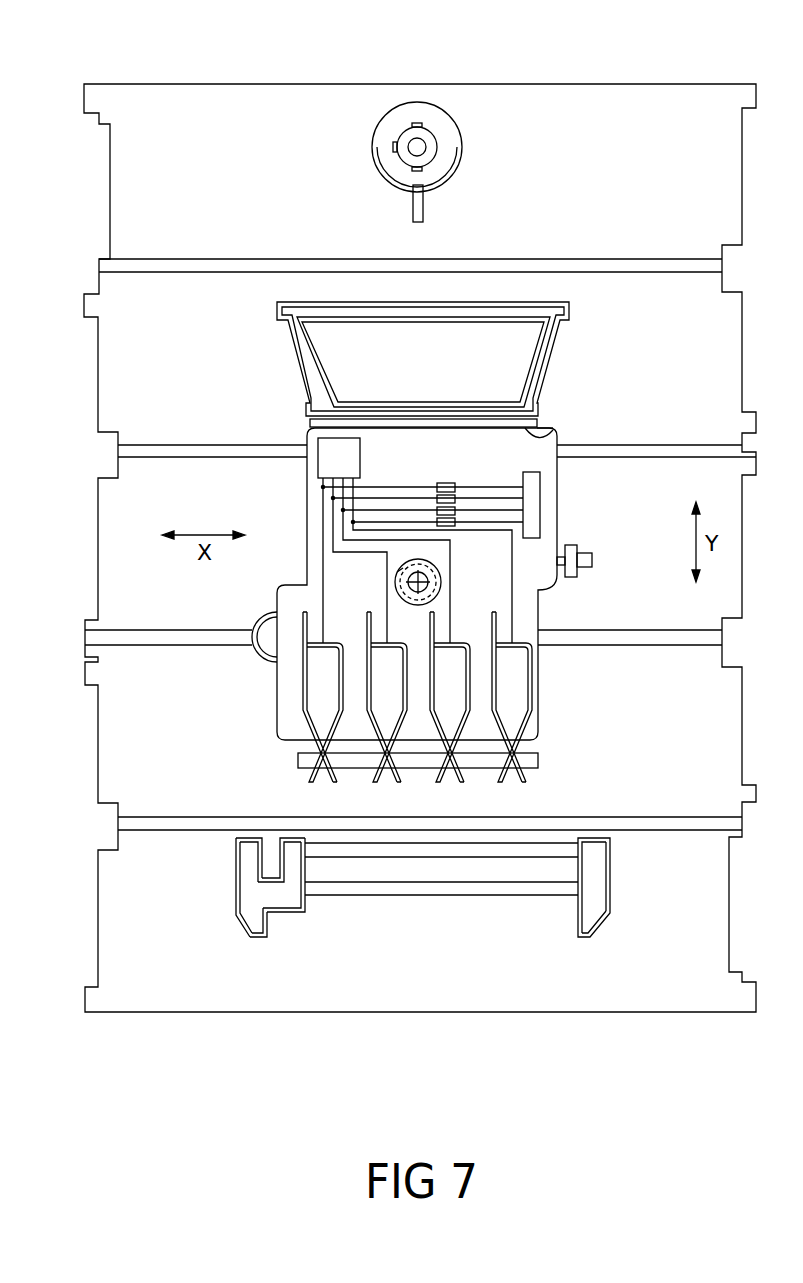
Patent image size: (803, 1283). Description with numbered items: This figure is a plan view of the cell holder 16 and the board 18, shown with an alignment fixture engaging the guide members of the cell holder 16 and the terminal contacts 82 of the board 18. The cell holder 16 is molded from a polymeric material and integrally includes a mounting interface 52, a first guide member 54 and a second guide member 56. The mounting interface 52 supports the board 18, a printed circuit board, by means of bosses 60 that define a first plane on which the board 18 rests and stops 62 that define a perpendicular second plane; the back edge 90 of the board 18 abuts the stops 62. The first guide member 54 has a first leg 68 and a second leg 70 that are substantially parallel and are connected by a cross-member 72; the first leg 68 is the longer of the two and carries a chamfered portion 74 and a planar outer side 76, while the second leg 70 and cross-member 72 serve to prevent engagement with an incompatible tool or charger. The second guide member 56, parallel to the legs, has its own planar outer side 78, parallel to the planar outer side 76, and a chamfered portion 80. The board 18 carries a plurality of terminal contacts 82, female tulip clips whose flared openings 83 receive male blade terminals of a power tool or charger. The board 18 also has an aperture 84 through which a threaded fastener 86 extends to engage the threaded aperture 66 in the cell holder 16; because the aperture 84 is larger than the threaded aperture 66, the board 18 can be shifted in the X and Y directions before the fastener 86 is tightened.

The cell holder 16 is at (678, 84).
The board 18 is at (548, 500).
The mounting interface 52 is at (575, 527).
The first guide member 54 is at (239, 917).
The second guide member 56 is at (644, 897).
The bosses 60 is at (262, 653).
The stops 62 is at (310, 424).
The threaded aperture 66 is at (432, 565).
The first leg 68 is at (252, 850).
The second leg 70 is at (290, 852).
The cross-member 72 is at (277, 897).
The chamfered portion 74 is at (245, 927).
The planar outer side 76 is at (237, 897).
The planar outer side 78 is at (610, 890).
The chamfered portion 80 is at (600, 927).
The terminal contacts 82 is at (378, 642).
The flared openings 83 is at (373, 780).
The aperture 84 is at (397, 572).
The threaded fastener 86 is at (441, 588).
The back edge 90 is at (468, 430).